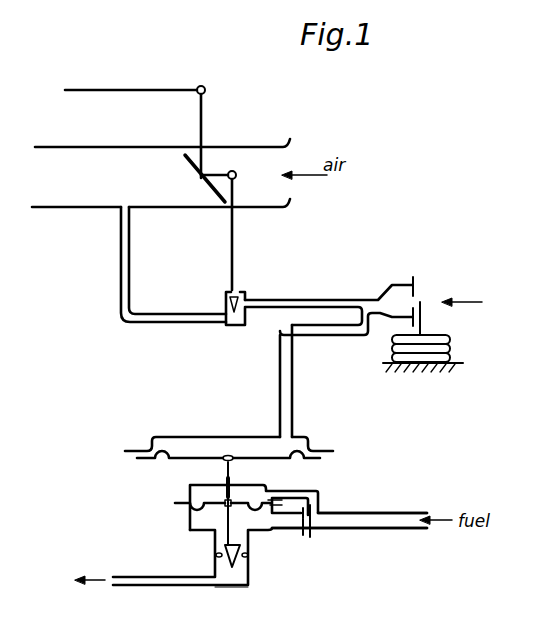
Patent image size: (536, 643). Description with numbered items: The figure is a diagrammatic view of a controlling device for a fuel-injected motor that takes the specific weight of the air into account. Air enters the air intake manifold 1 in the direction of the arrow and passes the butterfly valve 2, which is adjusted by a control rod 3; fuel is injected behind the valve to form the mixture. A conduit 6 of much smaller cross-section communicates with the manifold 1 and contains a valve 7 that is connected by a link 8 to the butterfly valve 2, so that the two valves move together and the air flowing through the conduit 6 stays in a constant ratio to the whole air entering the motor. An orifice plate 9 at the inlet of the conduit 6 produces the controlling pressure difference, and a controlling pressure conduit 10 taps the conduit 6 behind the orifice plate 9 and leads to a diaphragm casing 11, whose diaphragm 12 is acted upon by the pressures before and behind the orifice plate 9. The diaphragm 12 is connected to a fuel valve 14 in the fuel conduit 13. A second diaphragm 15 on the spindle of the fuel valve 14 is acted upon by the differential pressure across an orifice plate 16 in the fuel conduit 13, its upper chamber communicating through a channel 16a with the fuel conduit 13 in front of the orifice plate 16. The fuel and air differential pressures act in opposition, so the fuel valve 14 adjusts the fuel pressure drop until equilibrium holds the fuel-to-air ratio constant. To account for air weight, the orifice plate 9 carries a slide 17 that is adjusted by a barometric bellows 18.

The air intake manifold 1 is at (122, 145).
The butterfly valve 2 is at (190, 162).
The control rod 3 is at (130, 88).
The conduit 6 is at (125, 262).
The valve 7 is at (247, 298).
The link 8 is at (236, 243).
The orifice plate 9 is at (414, 286).
The controlling pressure conduit 10 is at (288, 383).
The diaphragm casing 11 is at (184, 443).
The diaphragm 12 is at (185, 461).
The fuel conduit 13 is at (378, 512).
The fuel valve 14 is at (222, 553).
The second diaphragm 15 is at (222, 515).
The orifice plate 16 is at (312, 530).
The channel 16a is at (308, 495).
The slide 17 is at (430, 334).
The barometric bellows 18 is at (455, 358).